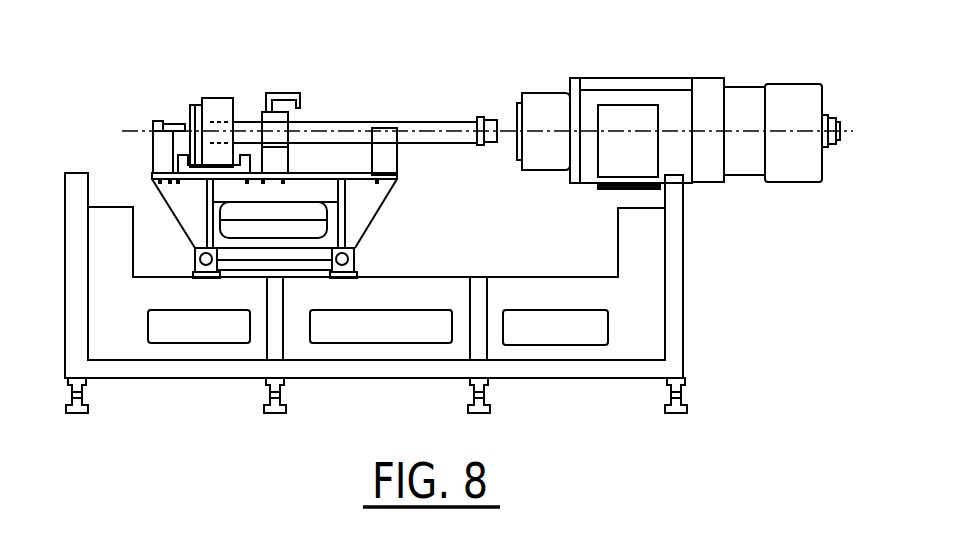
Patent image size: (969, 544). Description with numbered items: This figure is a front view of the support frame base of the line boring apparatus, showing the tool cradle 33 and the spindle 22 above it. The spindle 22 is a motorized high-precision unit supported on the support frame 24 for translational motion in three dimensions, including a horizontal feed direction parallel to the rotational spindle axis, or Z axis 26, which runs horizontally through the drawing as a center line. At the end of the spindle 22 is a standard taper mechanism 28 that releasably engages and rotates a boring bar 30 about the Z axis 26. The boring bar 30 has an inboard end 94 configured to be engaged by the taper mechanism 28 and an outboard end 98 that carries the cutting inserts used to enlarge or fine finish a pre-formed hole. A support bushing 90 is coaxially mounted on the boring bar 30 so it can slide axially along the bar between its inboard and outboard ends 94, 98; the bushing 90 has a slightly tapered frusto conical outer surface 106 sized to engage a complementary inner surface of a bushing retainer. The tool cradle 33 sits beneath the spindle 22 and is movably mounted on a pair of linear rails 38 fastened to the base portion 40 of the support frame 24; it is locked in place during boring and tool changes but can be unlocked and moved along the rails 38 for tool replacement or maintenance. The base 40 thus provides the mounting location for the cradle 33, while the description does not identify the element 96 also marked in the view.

The spindle 22 is at (720, 74).
The support frame 24 is at (690, 342).
The rotational spindle axis (Z axis) 26 is at (133, 130).
The taper mechanism 28 is at (528, 92).
The boring bar 30 is at (340, 127).
The tool cradle 33 is at (153, 158).
The linear rails 38 is at (195, 257).
The base portion 40 is at (643, 347).
The support bushing 90 is at (217, 95).
The inboard end 94 is at (462, 126).
The end cap 96 is at (165, 122).
The outboard end 98 is at (203, 102).
The frusto conical outer surface 106 is at (228, 112).